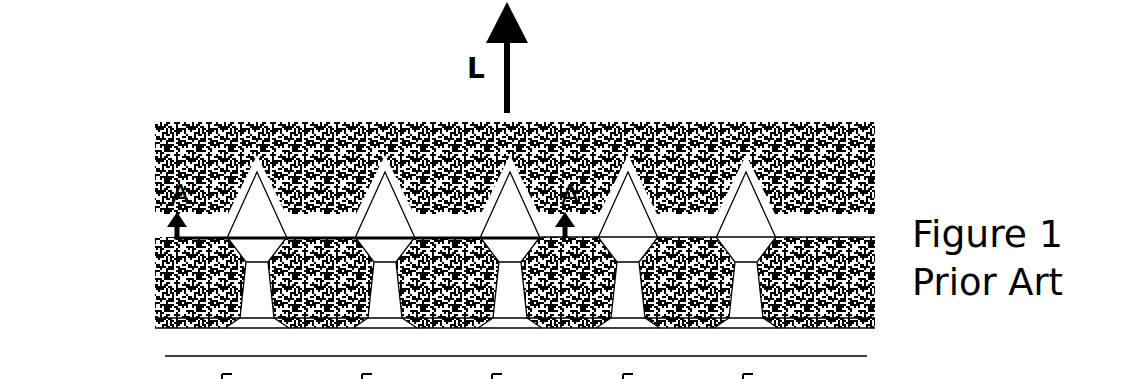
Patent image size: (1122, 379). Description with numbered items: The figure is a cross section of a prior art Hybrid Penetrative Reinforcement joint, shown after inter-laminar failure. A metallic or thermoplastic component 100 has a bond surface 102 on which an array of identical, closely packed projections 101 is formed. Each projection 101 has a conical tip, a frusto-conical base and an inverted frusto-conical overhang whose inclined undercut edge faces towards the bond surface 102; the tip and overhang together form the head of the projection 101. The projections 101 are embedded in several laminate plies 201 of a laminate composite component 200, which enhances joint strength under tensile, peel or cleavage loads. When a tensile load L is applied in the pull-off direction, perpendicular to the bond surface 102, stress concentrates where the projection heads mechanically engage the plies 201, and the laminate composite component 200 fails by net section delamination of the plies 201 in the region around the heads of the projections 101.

The metallic or thermoplastic component 100 is at (233, 340).
The projection 101 is at (257, 210).
The bond surface 102 is at (191, 316).
The laminate composite component 200 is at (853, 168).
The laminate plies 201 is at (875, 238).